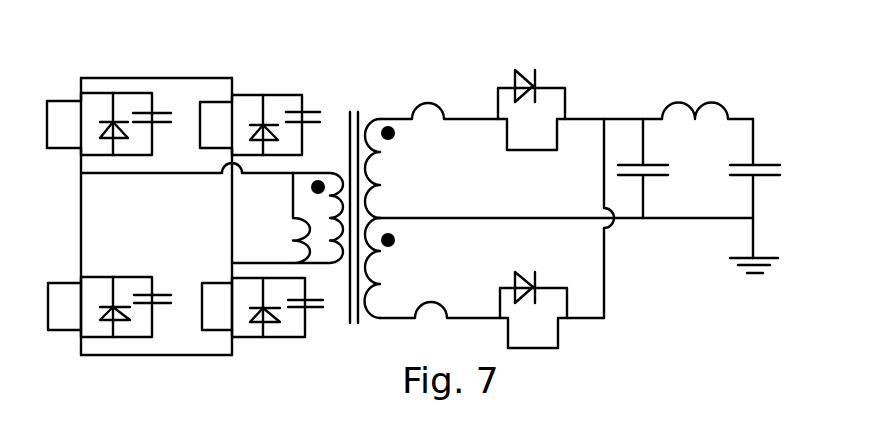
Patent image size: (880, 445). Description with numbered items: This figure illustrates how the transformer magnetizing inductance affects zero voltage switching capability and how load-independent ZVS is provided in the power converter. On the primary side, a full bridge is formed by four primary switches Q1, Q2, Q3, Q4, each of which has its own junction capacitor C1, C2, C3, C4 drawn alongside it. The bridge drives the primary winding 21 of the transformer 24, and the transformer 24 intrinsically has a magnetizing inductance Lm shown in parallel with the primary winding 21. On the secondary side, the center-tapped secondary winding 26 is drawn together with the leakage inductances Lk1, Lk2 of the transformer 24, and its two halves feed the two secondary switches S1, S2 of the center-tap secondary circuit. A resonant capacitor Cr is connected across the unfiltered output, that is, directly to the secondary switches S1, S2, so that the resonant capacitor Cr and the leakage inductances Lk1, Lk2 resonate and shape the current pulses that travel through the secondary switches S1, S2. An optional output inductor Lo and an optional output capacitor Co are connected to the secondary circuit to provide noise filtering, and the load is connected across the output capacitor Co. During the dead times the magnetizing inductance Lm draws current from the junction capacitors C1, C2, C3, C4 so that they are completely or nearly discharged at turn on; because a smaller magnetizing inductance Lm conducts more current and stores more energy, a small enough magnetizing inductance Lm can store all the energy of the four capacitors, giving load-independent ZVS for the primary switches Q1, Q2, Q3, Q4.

The primary switch Q1 is at (99, 116).
The primary switch Q2 is at (100, 307).
The primary switch Q3 is at (251, 116).
The primary switch Q4 is at (253, 307).
The junction capacitor C1 is at (155, 112).
The junction capacitor C2 is at (168, 306).
The junction capacitor C3 is at (308, 111).
The junction capacitor C4 is at (312, 310).
The magnetizing inductance Lm is at (300, 212).
The primary winding 21 is at (337, 250).
The transformer 24 is at (350, 140).
The leakage inductance Lk1 is at (427, 103).
The leakage inductance Lk2 is at (433, 301).
The center-tapped secondary winding 26 is at (382, 216).
The secondary switch S1 is at (531, 110).
The secondary switch S2 is at (533, 310).
The output inductor Lo is at (672, 104).
The resonant capacitor Cr is at (658, 165).
The output capacitor Co is at (772, 163).